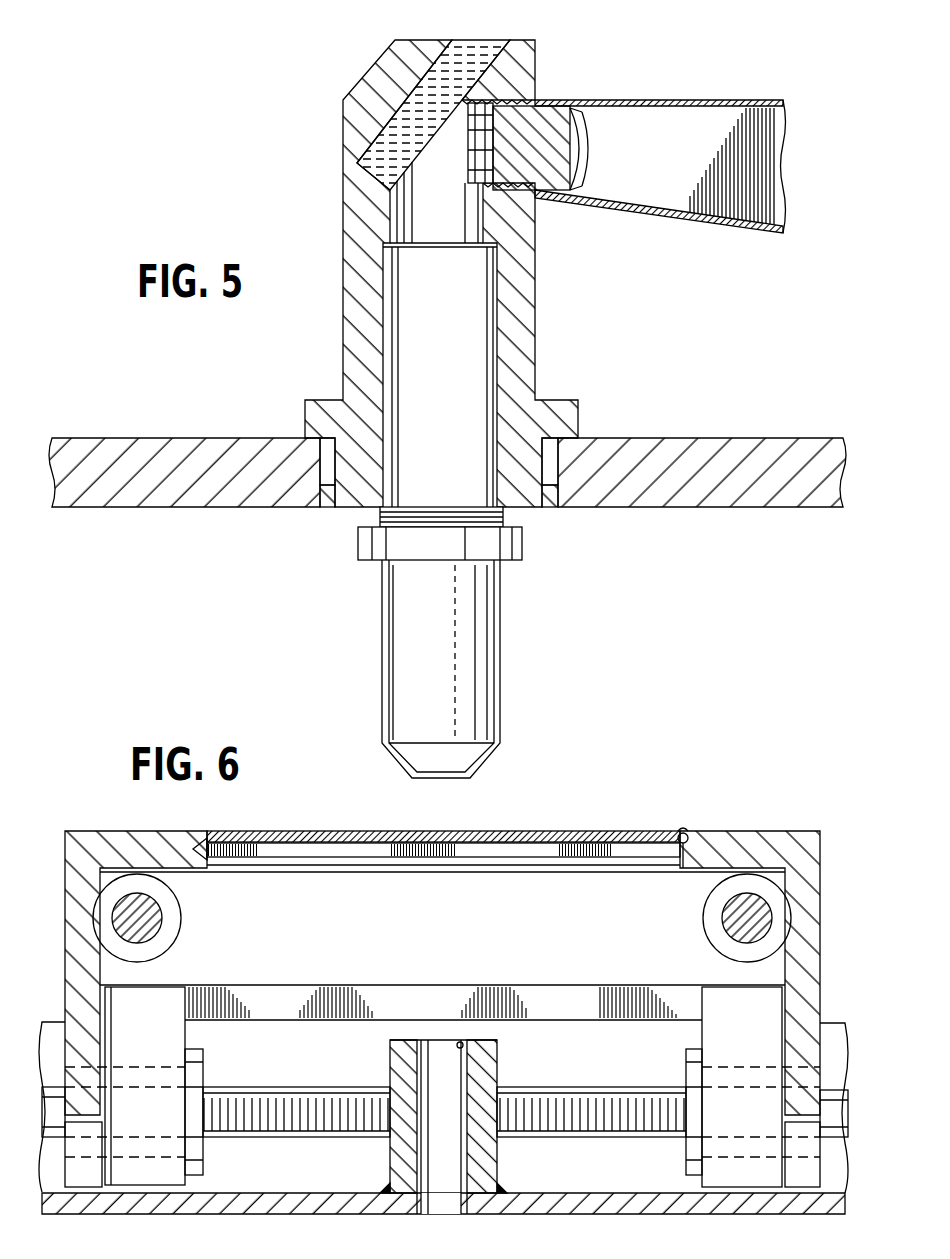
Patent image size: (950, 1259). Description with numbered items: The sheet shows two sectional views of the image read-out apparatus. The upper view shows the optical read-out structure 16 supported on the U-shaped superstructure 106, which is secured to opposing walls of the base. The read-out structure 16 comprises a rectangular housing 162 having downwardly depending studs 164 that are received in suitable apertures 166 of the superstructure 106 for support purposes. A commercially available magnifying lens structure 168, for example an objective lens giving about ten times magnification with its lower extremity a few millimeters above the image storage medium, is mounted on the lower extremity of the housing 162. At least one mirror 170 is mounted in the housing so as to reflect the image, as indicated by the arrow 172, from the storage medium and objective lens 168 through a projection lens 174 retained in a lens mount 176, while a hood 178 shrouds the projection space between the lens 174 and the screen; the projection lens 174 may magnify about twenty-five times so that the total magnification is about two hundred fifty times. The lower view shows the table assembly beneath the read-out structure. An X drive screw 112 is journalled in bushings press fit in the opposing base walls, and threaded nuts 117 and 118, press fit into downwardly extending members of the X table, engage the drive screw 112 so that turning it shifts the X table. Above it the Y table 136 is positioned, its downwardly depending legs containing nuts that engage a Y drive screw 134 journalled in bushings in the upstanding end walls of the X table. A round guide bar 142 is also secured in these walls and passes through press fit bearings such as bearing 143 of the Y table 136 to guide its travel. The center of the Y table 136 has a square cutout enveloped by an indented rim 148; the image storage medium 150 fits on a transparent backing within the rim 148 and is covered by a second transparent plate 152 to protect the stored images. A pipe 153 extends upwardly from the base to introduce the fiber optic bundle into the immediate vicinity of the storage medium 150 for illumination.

In FIG. 5, the optical read-out structure 16 is at (427, 273).
In FIG. 5, the U-shaped superstructure 106 is at (740, 499).
In FIG. 5, the rectangular housing 162 is at (525, 312).
In FIG. 5, the downwardly depending studs 164 is at (327, 457).
In FIG. 5, the apertures 166 is at (328, 506).
In FIG. 5, the magnifying lens structure 168 is at (478, 637).
In FIG. 5, the mirror 170 is at (455, 62).
In FIG. 5, the arrow 172 is at (458, 132).
In FIG. 5, the projection lens 174 is at (552, 163).
In FIG. 5, the lens mount 176 is at (561, 100).
In FIG. 5, the hood 178 is at (664, 217).
In FIG. 6, the X drive screw 112 is at (272, 1100).
In FIG. 6, the threaded nut 117 is at (692, 1072).
In FIG. 6, the threaded nut 118 is at (204, 1066).
In FIG. 6, the Y drive screw 134 is at (150, 930).
In FIG. 6, the Y table 136 is at (760, 826).
In FIG. 6, the round guide bar 142 is at (737, 925).
In FIG. 6, the press fit bearing 143 is at (708, 913).
In FIG. 6, the indented rim 148 is at (679, 871).
In FIG. 6, the image storage medium 150 is at (332, 838).
In FIG. 6, the second transparent plate 152 is at (525, 846).
In FIG. 6, the pipe 153 is at (461, 1044).